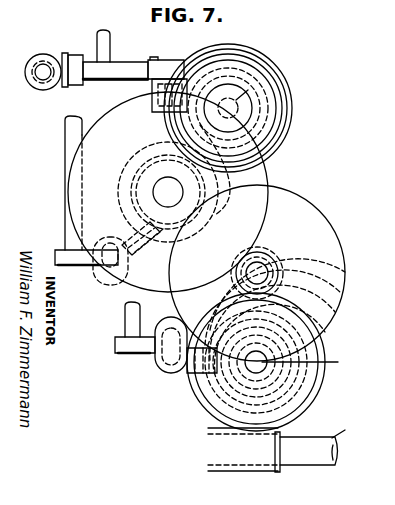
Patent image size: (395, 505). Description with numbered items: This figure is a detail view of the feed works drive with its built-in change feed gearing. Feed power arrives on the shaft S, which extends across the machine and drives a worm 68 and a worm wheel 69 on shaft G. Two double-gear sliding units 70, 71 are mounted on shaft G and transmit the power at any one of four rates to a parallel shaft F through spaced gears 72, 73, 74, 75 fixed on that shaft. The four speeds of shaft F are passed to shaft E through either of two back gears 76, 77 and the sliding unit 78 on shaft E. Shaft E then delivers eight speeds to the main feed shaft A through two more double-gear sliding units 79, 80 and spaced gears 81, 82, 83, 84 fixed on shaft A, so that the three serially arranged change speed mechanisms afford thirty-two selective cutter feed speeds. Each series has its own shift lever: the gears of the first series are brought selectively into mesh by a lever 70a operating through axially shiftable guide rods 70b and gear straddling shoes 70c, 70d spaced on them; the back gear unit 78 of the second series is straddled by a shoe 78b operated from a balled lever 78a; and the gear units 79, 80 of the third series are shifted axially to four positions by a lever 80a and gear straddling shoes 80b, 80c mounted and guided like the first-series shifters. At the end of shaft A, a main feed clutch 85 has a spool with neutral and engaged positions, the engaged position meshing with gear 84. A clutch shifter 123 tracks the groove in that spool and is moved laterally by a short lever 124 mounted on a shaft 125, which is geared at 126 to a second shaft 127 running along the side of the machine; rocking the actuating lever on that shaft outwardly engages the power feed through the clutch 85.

The worm 68 is at (276, 472).
The worm wheel 69 is at (314, 403).
The double-gear sliding unit 70 is at (326, 354).
The lever 70a is at (124, 308).
The guide rods 70b is at (160, 357).
The gear straddling shoe 70c is at (175, 375).
The gear straddling shoe 70d is at (200, 405).
The double-gear sliding unit 71 is at (320, 378).
The spaced gear 72 is at (325, 332).
The spaced gear 73 is at (335, 312).
The spaced gear 74 is at (340, 292).
The spaced gear 75 is at (346, 272).
The back gear 76 is at (346, 250).
The back gear 77 is at (267, 260).
The sliding unit 78 is at (270, 175).
The balled lever 78a is at (112, 42).
The shoe 78b is at (150, 88).
The double-gear sliding unit 79 is at (205, 228).
The double-gear sliding unit 80 is at (140, 160).
The lever 80a is at (60, 140).
The gear straddling shoe 80b is at (125, 208).
The gear straddling shoe 80c is at (118, 232).
The spaced gear 81 is at (275, 85).
The spaced gear 82 is at (280, 100).
The spaced gear 83 is at (290, 110).
The spaced gear 84 is at (291, 128).
The main feed clutch 85 is at (255, 50).
The clutch shifter 123 is at (228, 103).
The short lever 124 is at (153, 62).
The shaft 125 is at (73, 53).
The gearing 126 is at (38, 55).
The second shaft 127 is at (40, 76).
The shaft S is at (318, 441).